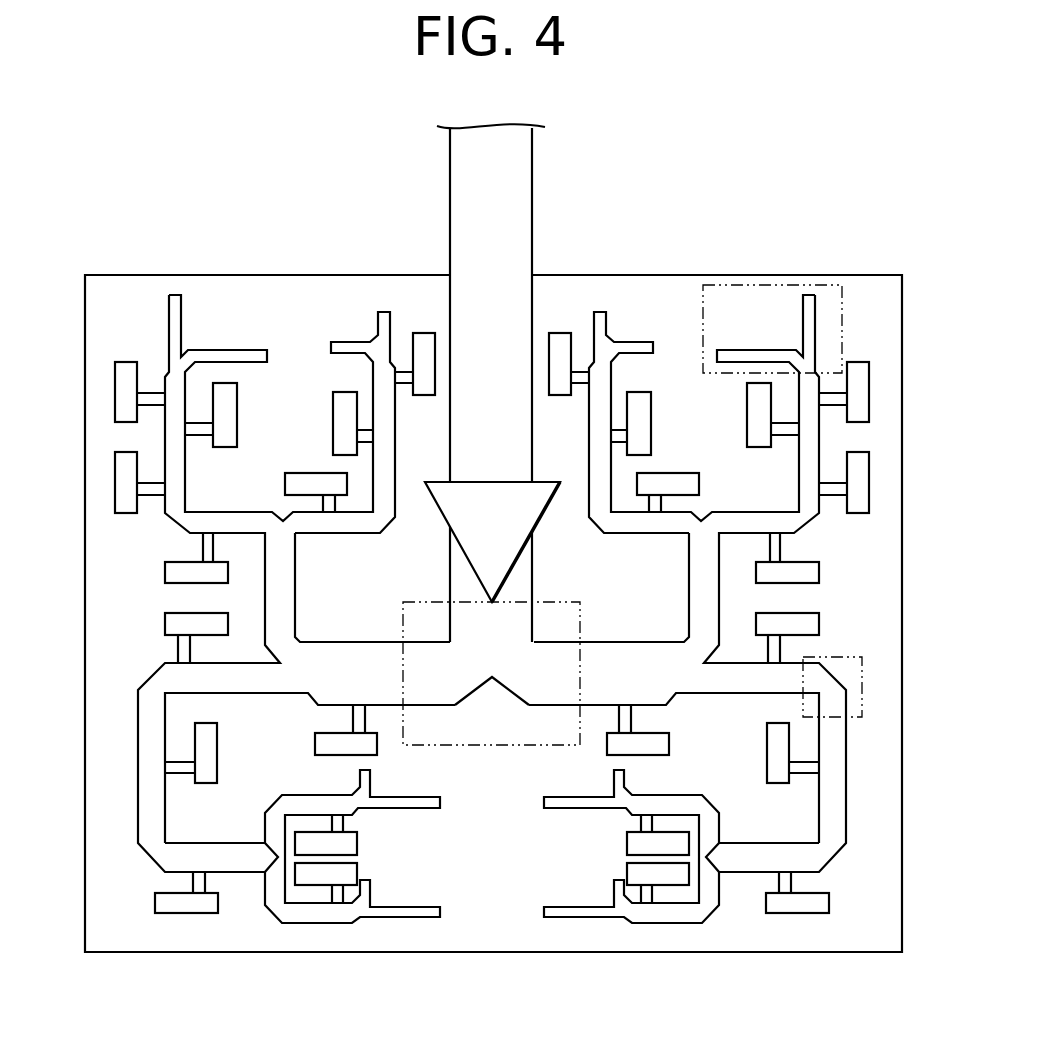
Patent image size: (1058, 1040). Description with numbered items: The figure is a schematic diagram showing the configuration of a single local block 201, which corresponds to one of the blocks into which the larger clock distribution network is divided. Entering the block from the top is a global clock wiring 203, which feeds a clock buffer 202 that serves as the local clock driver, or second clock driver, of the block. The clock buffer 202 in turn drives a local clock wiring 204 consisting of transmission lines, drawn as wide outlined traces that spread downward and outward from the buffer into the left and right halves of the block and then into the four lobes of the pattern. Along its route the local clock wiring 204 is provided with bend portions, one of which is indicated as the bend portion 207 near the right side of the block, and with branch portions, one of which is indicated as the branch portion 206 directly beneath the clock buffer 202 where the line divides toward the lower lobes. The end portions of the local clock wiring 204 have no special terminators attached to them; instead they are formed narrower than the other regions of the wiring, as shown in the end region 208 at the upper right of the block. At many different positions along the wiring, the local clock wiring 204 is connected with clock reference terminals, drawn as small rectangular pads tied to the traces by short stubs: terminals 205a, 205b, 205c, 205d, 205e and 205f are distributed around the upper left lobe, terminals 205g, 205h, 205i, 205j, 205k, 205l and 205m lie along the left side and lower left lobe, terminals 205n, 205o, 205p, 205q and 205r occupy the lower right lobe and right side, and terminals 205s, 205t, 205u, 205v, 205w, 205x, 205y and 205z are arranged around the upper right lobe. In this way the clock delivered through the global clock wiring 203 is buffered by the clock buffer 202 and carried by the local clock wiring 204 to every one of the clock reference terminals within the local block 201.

The local block 201 is at (230, 958).
The clock buffer 202 is at (527, 508).
The global clock wiring 203 is at (513, 210).
The local clock wiring 204 is at (357, 652).
The clock reference terminal 205a is at (125, 370).
The clock reference terminal 205b is at (125, 468).
The clock reference terminal 205c is at (227, 407).
The clock reference terminal 205d is at (337, 407).
The clock reference terminal 205e is at (313, 478).
The clock reference terminal 205f is at (423, 345).
The clock reference terminal 205g is at (187, 572).
The clock reference terminal 205h is at (187, 627).
The clock reference terminal 205i is at (188, 902).
The clock reference terminal 205j is at (208, 763).
The clock reference terminal 205k is at (320, 742).
The clock reference terminal 205l is at (352, 873).
The clock reference terminal 205m is at (352, 842).
The clock reference terminal 205n is at (648, 747).
The clock reference terminal 205o is at (635, 843).
The clock reference terminal 205p is at (635, 873).
The clock reference terminal 205q is at (806, 905).
The clock reference terminal 205r is at (778, 772).
The clock reference terminal 205s is at (805, 625).
The clock reference terminal 205t is at (805, 570).
The clock reference terminal 205u is at (882, 455).
The clock reference terminal 205v is at (860, 370).
The clock reference terminal 205w is at (758, 422).
The clock reference terminal 205x is at (655, 388).
The clock reference terminal 205y is at (698, 478).
The clock reference terminal 205z is at (560, 345).
The branch portion 206 is at (545, 745).
The bend portion 207 is at (862, 668).
The end region 208 is at (743, 283).